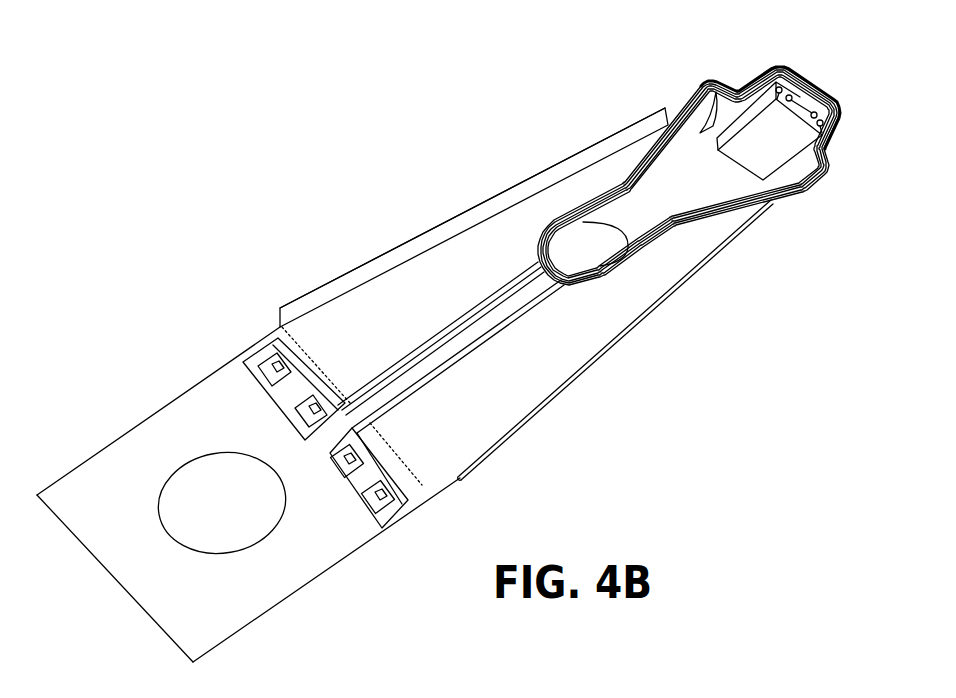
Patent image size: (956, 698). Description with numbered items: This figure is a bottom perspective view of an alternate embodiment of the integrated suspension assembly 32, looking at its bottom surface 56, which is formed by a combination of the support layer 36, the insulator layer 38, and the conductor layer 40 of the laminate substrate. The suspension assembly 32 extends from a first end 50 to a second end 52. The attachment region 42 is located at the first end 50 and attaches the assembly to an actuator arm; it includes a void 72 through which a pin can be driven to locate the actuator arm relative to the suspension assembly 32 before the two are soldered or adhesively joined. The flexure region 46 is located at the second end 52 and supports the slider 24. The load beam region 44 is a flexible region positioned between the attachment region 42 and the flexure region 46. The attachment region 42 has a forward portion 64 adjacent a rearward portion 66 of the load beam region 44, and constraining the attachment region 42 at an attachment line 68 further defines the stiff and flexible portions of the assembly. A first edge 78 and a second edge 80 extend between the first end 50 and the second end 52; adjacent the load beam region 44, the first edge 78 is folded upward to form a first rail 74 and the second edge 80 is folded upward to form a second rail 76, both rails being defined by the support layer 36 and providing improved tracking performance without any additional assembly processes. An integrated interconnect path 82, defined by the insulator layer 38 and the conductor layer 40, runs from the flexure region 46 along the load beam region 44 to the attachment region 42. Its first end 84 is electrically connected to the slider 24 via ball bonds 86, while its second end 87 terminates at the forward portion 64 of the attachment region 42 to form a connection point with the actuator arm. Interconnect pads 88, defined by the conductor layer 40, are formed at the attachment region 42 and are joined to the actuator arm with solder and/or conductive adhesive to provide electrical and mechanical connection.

The suspension assembly 32 is at (122, 328).
The attachment region 42 is at (248, 494).
The first end 50 is at (99, 568).
The first edge 78 is at (290, 598).
The void 72 is at (190, 478).
The load beam region 44 is at (474, 255).
The second rail 76 is at (537, 180).
The bottom surface 56 is at (428, 276).
The second edge 80 is at (237, 357).
The interconnect pads 88 is at (270, 377).
The insulator layer 38 is at (458, 432).
The conductor layer 40 is at (470, 345).
The second end 87 is at (318, 443).
The attachment line 68 is at (422, 485).
The rearward portion 66 is at (428, 465).
The forward portion 64 is at (345, 540).
The first rail 74 is at (615, 341).
The support layer 36 is at (720, 253).
The integrated interconnect path 82 is at (602, 233).
The first end 84 is at (825, 100).
The slider 24 is at (729, 116).
The ball bonds 86 is at (753, 93).
The flexure region 46 is at (810, 94).
The second end 52 is at (822, 92).